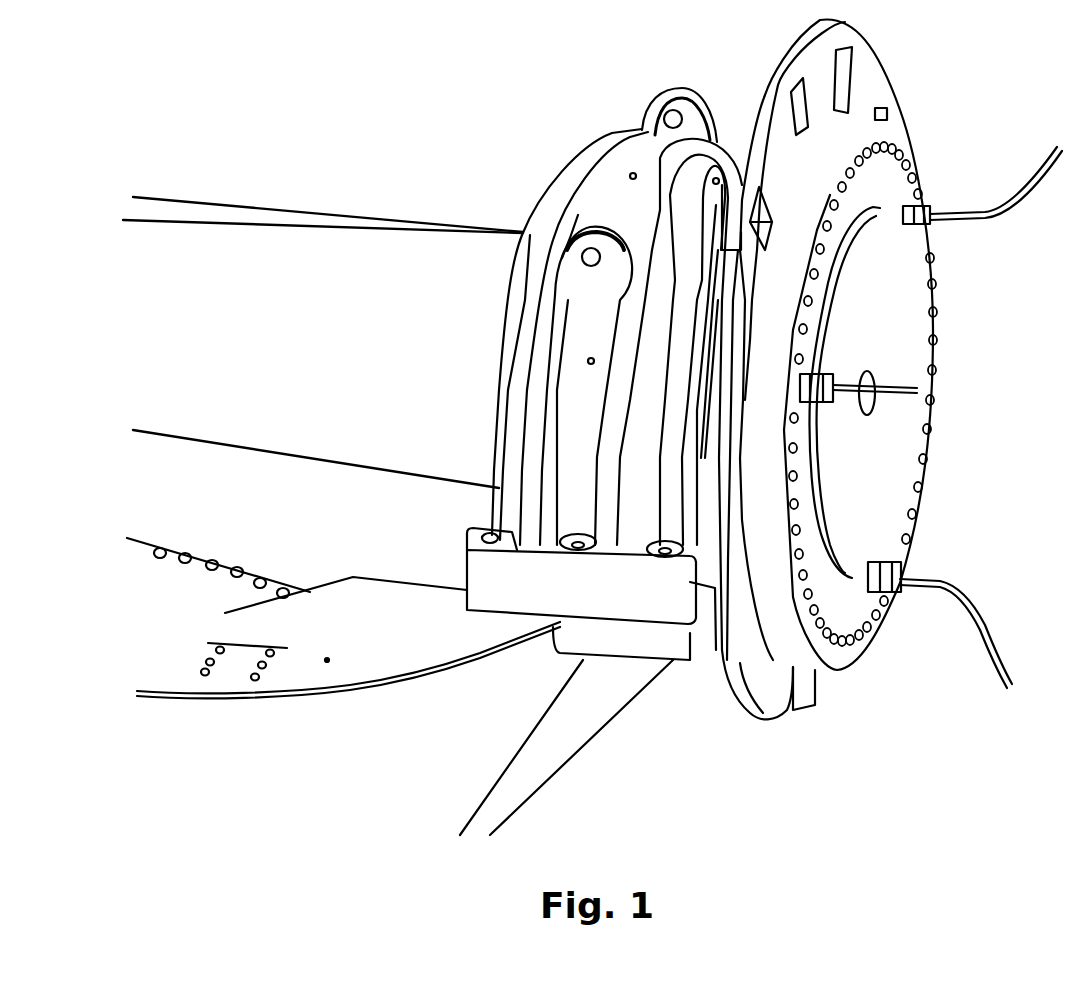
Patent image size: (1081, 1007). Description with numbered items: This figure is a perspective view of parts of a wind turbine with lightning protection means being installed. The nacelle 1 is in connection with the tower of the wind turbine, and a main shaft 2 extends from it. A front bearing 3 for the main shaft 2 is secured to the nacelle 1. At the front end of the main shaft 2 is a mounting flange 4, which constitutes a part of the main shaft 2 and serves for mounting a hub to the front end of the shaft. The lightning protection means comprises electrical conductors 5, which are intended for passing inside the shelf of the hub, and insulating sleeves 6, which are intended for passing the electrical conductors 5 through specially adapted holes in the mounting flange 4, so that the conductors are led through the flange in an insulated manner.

The nacelle 1 is at (208, 777).
The main shaft 2 is at (346, 370).
The front bearing 3 is at (557, 600).
The mounting flange 4 is at (773, 382).
The electrical conductors 5 is at (1012, 216).
The insulating sleeves 6 is at (930, 204).